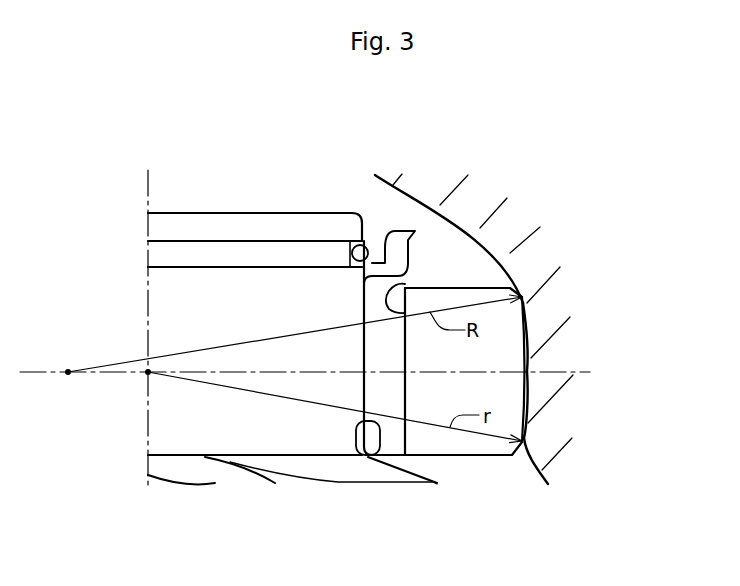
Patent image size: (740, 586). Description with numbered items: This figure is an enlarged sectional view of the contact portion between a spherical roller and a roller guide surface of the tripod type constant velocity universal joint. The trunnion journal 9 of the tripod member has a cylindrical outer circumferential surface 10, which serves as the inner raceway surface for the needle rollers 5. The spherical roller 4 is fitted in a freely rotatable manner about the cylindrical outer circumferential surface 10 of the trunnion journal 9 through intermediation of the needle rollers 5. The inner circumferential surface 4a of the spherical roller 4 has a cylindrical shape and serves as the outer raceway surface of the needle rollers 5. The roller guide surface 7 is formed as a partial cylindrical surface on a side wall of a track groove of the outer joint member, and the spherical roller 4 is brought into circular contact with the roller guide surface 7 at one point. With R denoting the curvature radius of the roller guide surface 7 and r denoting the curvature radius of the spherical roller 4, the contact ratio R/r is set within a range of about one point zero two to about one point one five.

The trunnion journal 9 is at (242, 292).
The needle rollers 5 is at (390, 393).
The cylindrical outer circumferential surface 10 is at (362, 424).
The spherical roller 4 is at (498, 389).
The inner circumferential surface 4a is at (400, 278).
The roller guide surface 7 is at (530, 342).